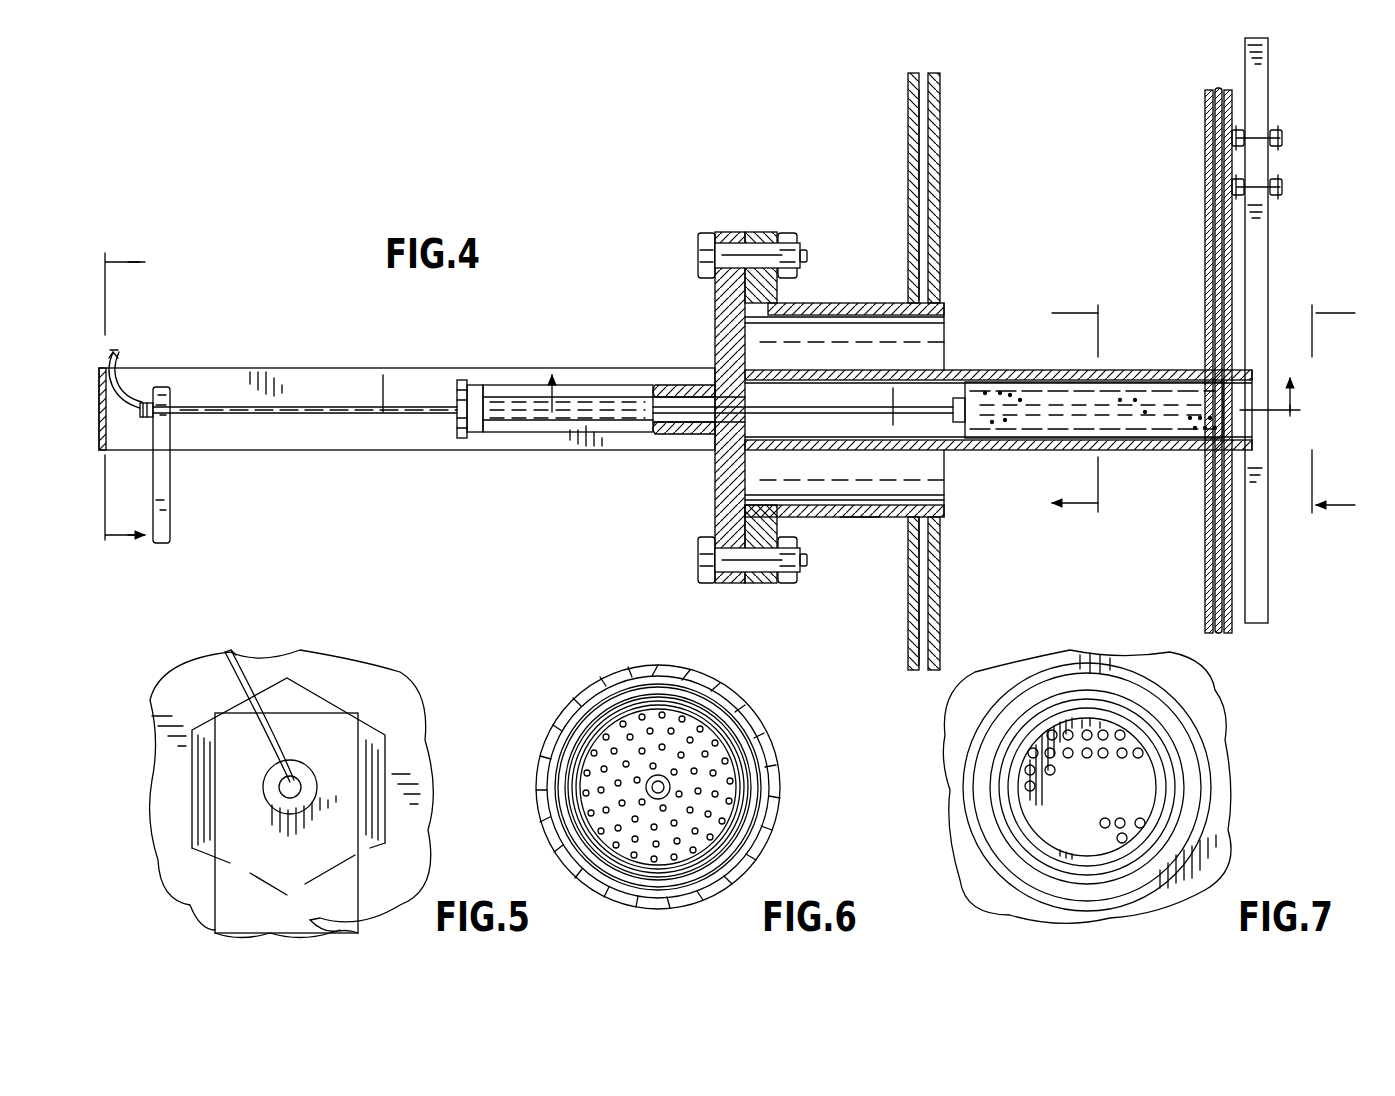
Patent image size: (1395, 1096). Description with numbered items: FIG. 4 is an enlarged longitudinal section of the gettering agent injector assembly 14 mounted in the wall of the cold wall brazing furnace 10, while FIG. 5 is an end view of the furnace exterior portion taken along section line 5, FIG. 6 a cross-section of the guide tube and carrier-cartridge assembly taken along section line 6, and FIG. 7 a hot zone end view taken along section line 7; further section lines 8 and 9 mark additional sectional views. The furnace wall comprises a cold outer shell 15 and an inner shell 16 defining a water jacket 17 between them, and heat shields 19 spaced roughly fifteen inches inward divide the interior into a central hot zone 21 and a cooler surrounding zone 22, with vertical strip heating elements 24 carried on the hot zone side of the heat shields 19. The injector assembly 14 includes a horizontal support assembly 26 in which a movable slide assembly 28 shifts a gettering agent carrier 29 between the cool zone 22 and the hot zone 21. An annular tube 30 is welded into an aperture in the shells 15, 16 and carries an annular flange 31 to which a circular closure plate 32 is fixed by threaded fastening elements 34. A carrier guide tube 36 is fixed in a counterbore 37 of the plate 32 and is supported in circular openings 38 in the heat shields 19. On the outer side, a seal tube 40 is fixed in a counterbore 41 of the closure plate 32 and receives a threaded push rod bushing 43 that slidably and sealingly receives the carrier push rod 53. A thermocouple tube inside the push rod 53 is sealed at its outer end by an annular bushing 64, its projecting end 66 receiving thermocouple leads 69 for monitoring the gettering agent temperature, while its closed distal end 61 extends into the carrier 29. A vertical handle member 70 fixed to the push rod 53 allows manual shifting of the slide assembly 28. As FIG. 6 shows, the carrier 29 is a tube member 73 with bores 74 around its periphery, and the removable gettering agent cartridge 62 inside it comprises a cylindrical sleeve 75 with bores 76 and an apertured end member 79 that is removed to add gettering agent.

In FIG. 4, the section line 5— 5 is at (125, 398).
In FIG. 4, the section line 6— 6 is at (1062, 410).
In FIG. 4, the section line 7— 7 is at (1344, 410).
In FIG. 4, the section line 8— 8 is at (1090, 401).
In FIG. 4, the section line 9— 9 is at (466, 373).
In FIG. 4, the brazing furnace 10 is at (888, 157).
In FIG. 4, the injector assembly 14 is at (760, 222).
In FIG. 4, the cold outer shell 15 is at (908, 193).
In FIG. 4, the inner shell 16 is at (940, 185).
In FIG. 4, the water jacket 17 is at (925, 118).
In FIG. 4, the heat shields 19 is at (1205, 112).
In FIG. 7, the heat shields 19 is at (965, 848).
In FIG. 4, the central hot zone 21 is at (1348, 157).
In FIG. 4, the cool surrounding zone 22 is at (1075, 157).
In FIG. 4, the strip heating elements 24 is at (1268, 232).
In FIG. 4, the support assembly 26 is at (692, 312).
In FIG. 4, the slide assembly 28 is at (750, 452).
In FIG. 4, the gettering agent carrier 29 is at (1148, 450).
In FIG. 6, the gettering agent carrier 29 is at (722, 694).
In FIG. 7, the gettering agent carrier 29 is at (1192, 798).
In FIG. 4, the annular tube 30 is at (850, 520).
In FIG. 4, the annular flange 31 is at (770, 583).
In FIG. 4, the circular closure plate 32 is at (728, 518).
In FIG. 5, the circular closure plate 32 is at (412, 843).
In FIG. 4, the threaded fastening elements 34 is at (703, 250).
In FIG. 4, the carrier guide tube 36 is at (980, 370).
In FIG. 6, the carrier guide tube 36 is at (605, 680).
In FIG. 7, the carrier guide tube 36 is at (1195, 715).
In FIG. 4, the counterbore 37 is at (738, 380).
In FIG. 4, the circular openings 38 is at (1185, 380).
In FIG. 4, the seal tube 40 is at (545, 432).
In FIG. 4, the counterbore 41 is at (475, 388).
In FIG. 4, the push rod bushing 43 is at (452, 488).
In FIG. 5, the push rod bushing 43 is at (200, 790).
In FIG. 4, the carrier push rod 53 is at (348, 440).
In FIG. 6, the distal end of thermocouple tube 61 is at (646, 785).
In FIG. 6, the gettering agent cartridge 62 is at (740, 738).
In FIG. 7, the gettering agent cartridge 62 is at (1160, 828).
In FIG. 4, the annular bushing 64 is at (150, 405).
In FIG. 5, the annular bushing 64 is at (310, 783).
In FIG. 4, the projecting end of thermocouple tube 66 is at (148, 420).
In FIG. 4, the thermocouple leads 69 is at (122, 388).
In FIG. 5, the thermocouple leads 69 is at (282, 730).
In FIG. 4, the vertical handle member 70 is at (165, 525).
In FIG. 5, the vertical handle member 70 is at (286, 825).
In FIG. 6, the tube member 73 is at (735, 848).
In FIG. 6, the bores 74 is at (760, 808).
In FIG. 6, the cylindrical sleeve 75 is at (578, 826).
In FIG. 6, the bores 76 is at (745, 790).
In FIG. 7, the apertured end member 79 is at (1137, 775).